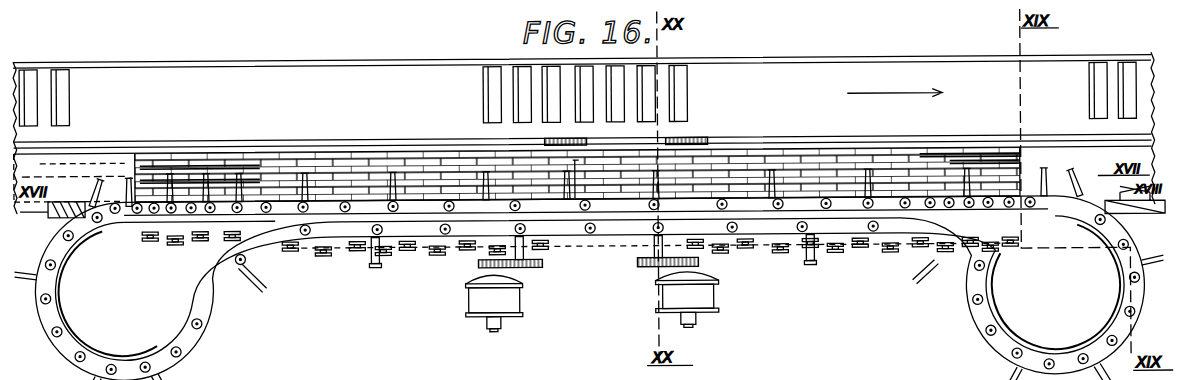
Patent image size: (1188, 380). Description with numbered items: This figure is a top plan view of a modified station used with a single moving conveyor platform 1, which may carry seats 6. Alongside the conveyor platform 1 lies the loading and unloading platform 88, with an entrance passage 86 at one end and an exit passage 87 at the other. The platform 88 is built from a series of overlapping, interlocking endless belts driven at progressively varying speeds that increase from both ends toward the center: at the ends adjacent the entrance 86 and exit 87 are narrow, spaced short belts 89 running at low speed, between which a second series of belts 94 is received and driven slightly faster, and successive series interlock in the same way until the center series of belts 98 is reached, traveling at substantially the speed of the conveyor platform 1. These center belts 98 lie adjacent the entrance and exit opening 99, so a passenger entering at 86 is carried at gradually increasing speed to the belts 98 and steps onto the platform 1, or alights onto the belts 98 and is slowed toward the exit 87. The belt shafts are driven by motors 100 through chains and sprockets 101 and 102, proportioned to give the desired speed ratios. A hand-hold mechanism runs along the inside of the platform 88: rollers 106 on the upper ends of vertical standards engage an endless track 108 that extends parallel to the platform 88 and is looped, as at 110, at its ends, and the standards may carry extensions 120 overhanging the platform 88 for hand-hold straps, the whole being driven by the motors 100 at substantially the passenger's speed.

The conveyor platform 1 is at (278, 105).
The seats 6 is at (63, 94).
The entrance passage 86 is at (70, 161).
The exit passage 87 is at (1118, 218).
The loading and unloading platform 88 is at (390, 163).
The short belts 89 is at (178, 162).
The second series of belts 94 is at (195, 165).
The center series of belts 98 is at (577, 182).
The entrance and exit opening 99 is at (538, 141).
The motors 100 is at (505, 299).
The chains and sprockets 101 is at (405, 249).
The chains and sprockets 102 is at (412, 251).
The rollers 106 is at (236, 260).
The endless track 108 is at (333, 203).
The loops 110 is at (589, 296).
The extensions 120 is at (306, 178).